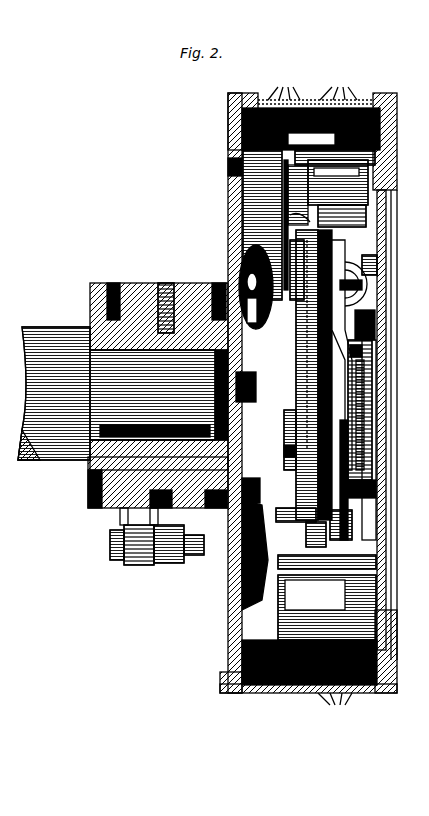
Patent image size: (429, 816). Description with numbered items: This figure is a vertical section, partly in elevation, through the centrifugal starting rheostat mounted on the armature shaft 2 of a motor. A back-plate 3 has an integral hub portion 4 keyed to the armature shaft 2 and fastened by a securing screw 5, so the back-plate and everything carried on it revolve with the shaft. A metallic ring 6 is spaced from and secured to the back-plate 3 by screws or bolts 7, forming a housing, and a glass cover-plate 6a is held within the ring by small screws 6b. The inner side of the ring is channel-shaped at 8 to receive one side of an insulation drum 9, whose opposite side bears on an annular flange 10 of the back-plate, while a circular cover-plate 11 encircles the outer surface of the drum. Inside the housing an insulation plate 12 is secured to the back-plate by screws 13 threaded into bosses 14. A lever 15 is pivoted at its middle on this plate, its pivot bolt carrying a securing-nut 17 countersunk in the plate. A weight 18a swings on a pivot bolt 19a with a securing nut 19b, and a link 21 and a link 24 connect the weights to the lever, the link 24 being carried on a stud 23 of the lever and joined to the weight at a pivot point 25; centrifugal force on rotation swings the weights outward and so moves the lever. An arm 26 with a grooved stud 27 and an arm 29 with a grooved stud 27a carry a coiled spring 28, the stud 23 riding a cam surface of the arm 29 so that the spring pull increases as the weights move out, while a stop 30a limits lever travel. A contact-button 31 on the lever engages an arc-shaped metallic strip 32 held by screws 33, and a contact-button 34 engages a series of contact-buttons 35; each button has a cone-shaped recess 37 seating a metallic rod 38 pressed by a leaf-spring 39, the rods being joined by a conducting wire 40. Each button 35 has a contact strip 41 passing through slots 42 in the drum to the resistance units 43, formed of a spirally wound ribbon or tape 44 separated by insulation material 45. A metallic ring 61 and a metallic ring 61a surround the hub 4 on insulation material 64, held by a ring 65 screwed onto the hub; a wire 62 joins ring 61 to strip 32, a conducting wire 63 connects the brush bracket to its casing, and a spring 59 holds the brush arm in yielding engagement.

The armature shaft 2 is at (54, 393).
The back-plate 3 is at (228, 668).
The hub portion 4 is at (90, 327).
The securing screw 5 is at (160, 335).
The ring 6 is at (392, 152).
The cover-plate 6a is at (388, 172).
The small screws 6b is at (388, 618).
The screws or bolts 7 is at (386, 232).
The channel 8 is at (378, 665).
The insulation drum 9 is at (322, 640).
The annular flange 10 is at (232, 695).
The circular cover-plate 11 is at (283, 695).
The insulation plate 12 is at (254, 490).
The screws 13 is at (228, 587).
The bosses 14 is at (225, 605).
The lever 15 is at (312, 569).
The securing-nut 17 is at (246, 387).
The weight 18a is at (290, 450).
The pivot bolt 19a is at (362, 350).
The securing nut 19b is at (155, 418).
The link 21 is at (352, 302).
The stud 23 is at (329, 528).
The link 24 is at (290, 470).
The pivot point 25 is at (314, 375).
The arm 26 is at (355, 372).
The grooved stud 27 is at (375, 324).
The grooved stud 27a is at (375, 488).
The coiled spring 28 is at (372, 412).
The arm 29 is at (348, 437).
The stop 30a is at (296, 520).
The contact-button 31 is at (261, 312).
The arc-shaped metallic strip 32 is at (248, 272).
The screws 33 is at (248, 258).
The contact-button 34 is at (283, 226).
The contact-buttons 35 is at (288, 200).
The cone-shaped recess 37 is at (299, 280).
The metallic rod 38 is at (357, 284).
The leaf-spring 39 is at (368, 284).
The conducting wire 40 is at (380, 270).
The contact strip 41 is at (282, 185).
The slots 42 is at (402, 208).
The resistance units 43 is at (342, 223).
The ribbon or tape 44 is at (291, 149).
The insulation material 45 is at (337, 397).
The spring 59 is at (145, 565).
The metallic ring 61 is at (188, 507).
The metallic ring 61a is at (130, 283).
The wire 62 is at (205, 282).
The conducting wire 63 is at (179, 552).
The insulation material 64 is at (105, 510).
The ring 65 is at (88, 490).